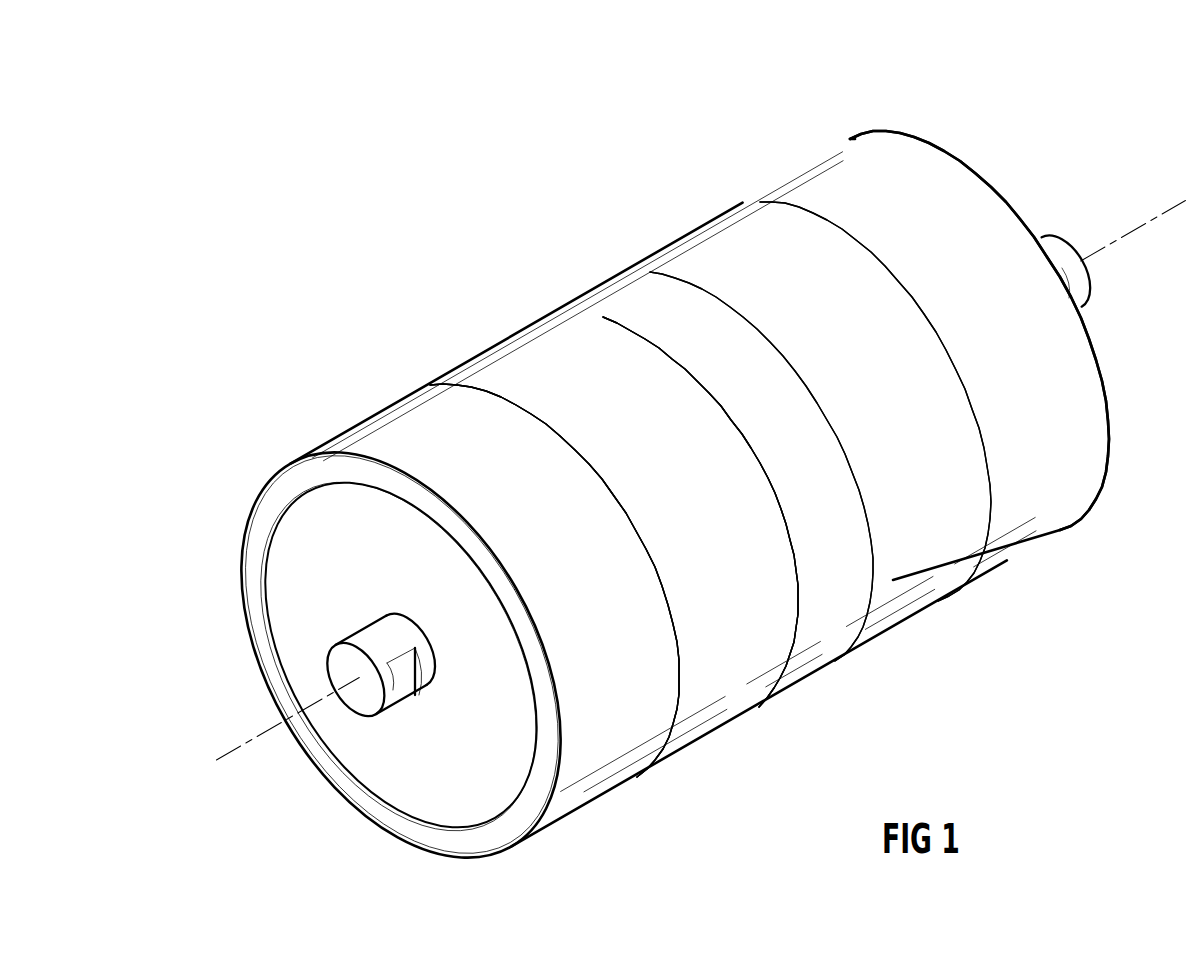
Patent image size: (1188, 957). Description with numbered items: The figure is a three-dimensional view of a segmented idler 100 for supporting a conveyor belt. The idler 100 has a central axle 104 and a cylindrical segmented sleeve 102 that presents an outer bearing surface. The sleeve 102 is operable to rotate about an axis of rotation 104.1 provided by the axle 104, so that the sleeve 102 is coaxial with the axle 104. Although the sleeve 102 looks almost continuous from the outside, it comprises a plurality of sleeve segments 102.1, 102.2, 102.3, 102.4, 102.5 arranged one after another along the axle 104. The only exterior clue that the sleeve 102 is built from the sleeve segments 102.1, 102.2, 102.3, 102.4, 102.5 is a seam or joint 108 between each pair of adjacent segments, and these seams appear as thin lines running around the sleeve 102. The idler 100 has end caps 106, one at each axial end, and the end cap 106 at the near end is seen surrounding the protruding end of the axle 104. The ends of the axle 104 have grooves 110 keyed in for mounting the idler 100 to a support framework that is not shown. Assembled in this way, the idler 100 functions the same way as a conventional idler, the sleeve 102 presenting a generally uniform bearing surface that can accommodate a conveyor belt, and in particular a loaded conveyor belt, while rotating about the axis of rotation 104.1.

The segmented idler 100 is at (403, 142).
The cylindrical segmented sleeve 102 is at (905, 138).
The sleeve segment 102.1 is at (596, 788).
The sleeve segment 102.2 is at (716, 720).
The sleeve segment 102.3 is at (820, 662).
The sleeve segment 102.4 is at (915, 600).
The sleeve segment 102.5 is at (1043, 539).
The central axle 104 is at (364, 700).
The axis of rotation 104.1 is at (248, 742).
The end cap 106 is at (300, 543).
The seam or joint 108 is at (586, 317).
The groove 110 is at (403, 678).